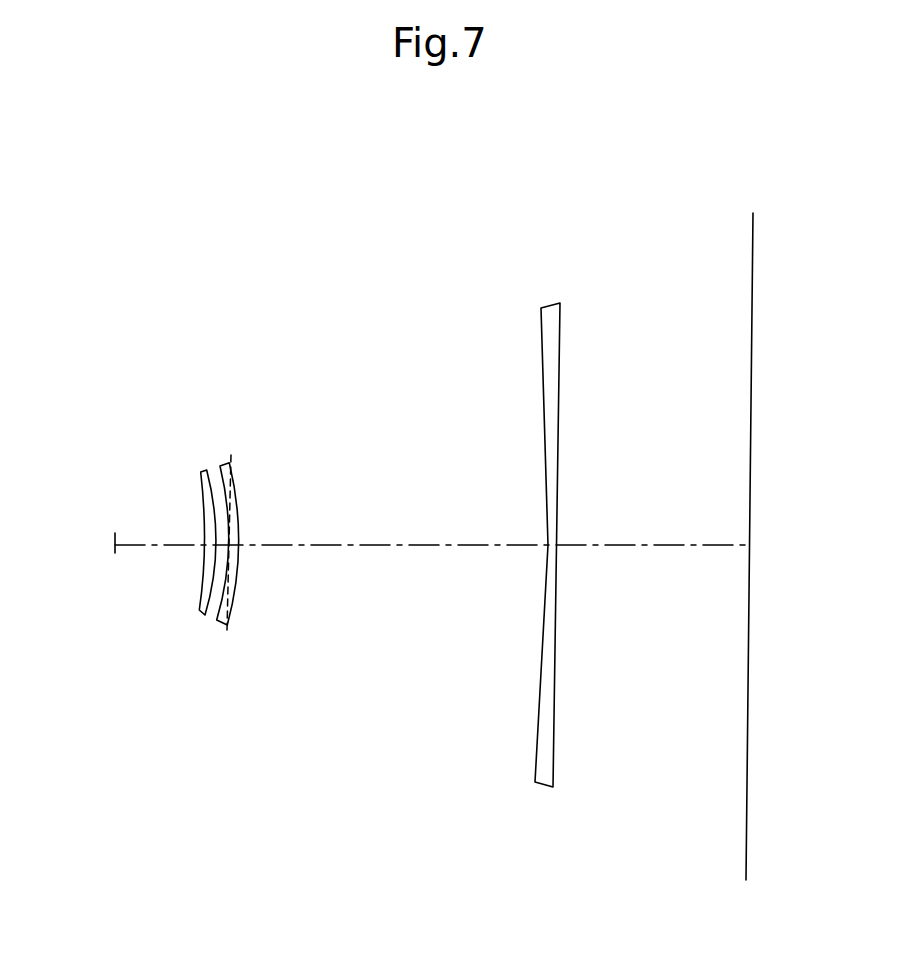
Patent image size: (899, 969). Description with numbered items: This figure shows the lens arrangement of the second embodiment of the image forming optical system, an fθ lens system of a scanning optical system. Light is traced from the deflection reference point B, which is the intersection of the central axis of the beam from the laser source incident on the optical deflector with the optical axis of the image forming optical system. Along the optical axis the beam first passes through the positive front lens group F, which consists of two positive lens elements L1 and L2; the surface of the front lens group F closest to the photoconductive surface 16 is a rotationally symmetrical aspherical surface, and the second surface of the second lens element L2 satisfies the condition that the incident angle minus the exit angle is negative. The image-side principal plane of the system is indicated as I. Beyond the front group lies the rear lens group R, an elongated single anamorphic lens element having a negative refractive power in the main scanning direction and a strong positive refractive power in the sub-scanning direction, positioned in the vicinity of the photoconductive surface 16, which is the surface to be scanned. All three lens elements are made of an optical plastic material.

The photoconductive surface 16 is at (753, 268).
The deflection reference point B is at (114, 546).
The front lens group F is at (252, 436).
The first lens element L1 is at (208, 592).
The second lens element L2 is at (234, 591).
The rear lens group R is at (580, 302).
The image-side principal plane I is at (228, 629).